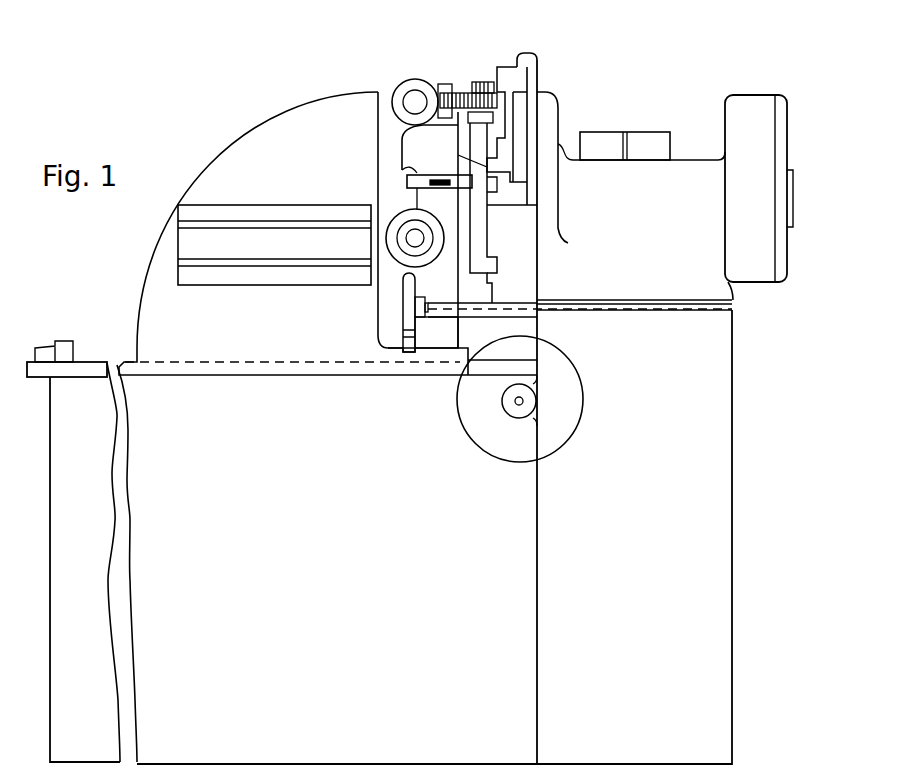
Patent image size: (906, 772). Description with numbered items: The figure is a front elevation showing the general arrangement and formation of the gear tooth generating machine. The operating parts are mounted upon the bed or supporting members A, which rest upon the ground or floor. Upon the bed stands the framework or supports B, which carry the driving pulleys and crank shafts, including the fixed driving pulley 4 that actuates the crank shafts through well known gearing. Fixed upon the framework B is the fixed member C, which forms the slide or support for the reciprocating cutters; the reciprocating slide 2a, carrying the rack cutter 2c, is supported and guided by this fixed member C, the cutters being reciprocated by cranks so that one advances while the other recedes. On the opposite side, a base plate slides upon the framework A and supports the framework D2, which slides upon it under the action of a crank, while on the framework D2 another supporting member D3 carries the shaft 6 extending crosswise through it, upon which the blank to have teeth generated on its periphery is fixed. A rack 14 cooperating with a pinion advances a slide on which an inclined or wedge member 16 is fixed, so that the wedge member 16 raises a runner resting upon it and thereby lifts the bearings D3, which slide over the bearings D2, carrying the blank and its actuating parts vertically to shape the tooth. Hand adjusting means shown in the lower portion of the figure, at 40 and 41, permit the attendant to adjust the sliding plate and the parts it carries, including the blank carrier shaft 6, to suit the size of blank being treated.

The bed or supporting members A is at (93, 590).
The framework or supports B is at (684, 185).
The fixed member C is at (513, 78).
The framework D2 is at (343, 113).
The supporting member D3 is at (425, 140).
The reciprocating slide 2a is at (505, 140).
The rack cutter 2c is at (477, 232).
The fixed driving pulley 4 is at (600, 145).
The shaft 6 is at (413, 238).
The rack 14 is at (410, 296).
The inclined or wedge member 16 is at (400, 352).
The driving wheel 40 is at (582, 390).
The hub 41 is at (517, 402).